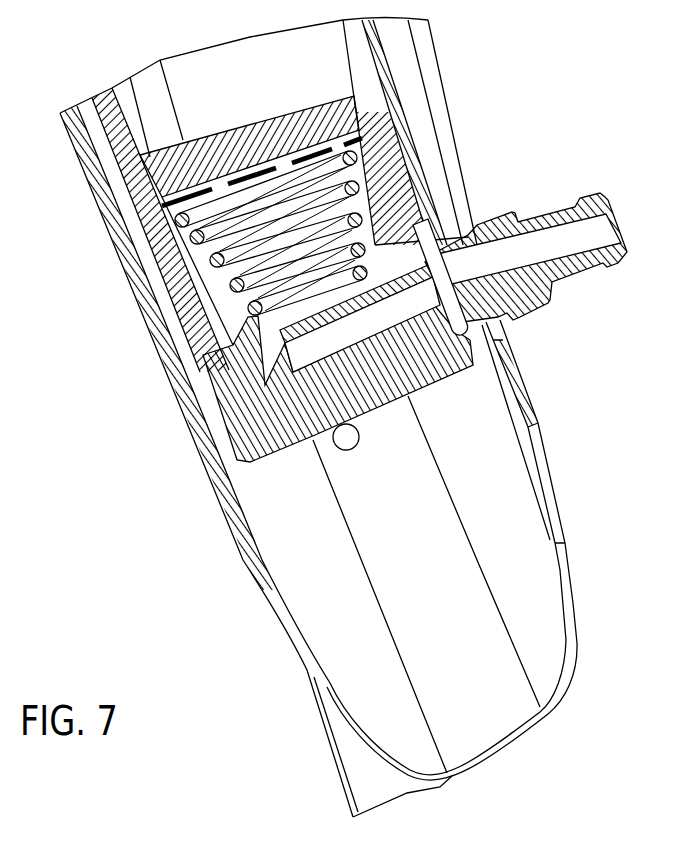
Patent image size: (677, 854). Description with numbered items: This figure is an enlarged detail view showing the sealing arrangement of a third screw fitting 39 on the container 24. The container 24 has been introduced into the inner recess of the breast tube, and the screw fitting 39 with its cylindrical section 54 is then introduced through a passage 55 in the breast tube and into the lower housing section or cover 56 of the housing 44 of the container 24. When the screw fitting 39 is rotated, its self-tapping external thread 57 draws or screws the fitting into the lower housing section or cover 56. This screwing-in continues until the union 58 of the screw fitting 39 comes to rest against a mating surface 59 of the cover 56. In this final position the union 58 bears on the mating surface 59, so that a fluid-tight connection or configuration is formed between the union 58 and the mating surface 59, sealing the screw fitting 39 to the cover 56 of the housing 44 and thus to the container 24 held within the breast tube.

The container 24 is at (395, 172).
The screw fitting 39 is at (600, 202).
The housing 44 is at (340, 139).
The cylindrical section 54 is at (415, 373).
The passage 55 is at (498, 333).
The lower housing section or cover 56 is at (445, 380).
The self-tapping external thread 57 is at (358, 420).
The union 58 is at (420, 227).
The mating surface 59 is at (470, 368).